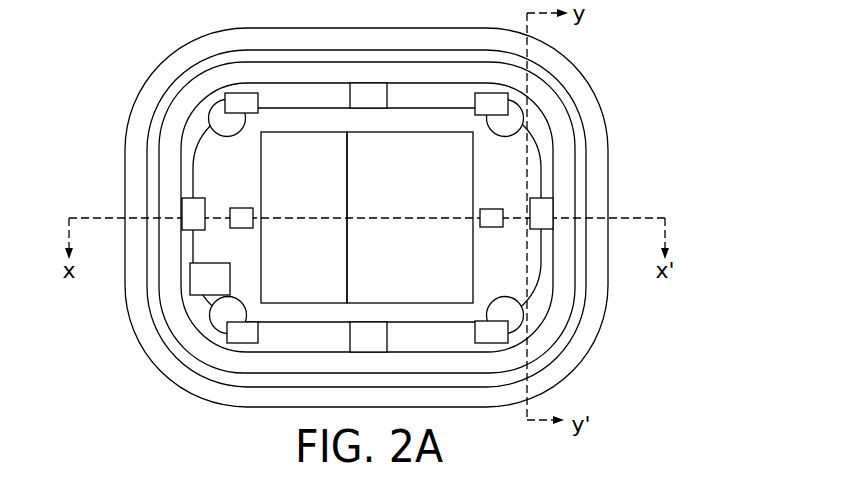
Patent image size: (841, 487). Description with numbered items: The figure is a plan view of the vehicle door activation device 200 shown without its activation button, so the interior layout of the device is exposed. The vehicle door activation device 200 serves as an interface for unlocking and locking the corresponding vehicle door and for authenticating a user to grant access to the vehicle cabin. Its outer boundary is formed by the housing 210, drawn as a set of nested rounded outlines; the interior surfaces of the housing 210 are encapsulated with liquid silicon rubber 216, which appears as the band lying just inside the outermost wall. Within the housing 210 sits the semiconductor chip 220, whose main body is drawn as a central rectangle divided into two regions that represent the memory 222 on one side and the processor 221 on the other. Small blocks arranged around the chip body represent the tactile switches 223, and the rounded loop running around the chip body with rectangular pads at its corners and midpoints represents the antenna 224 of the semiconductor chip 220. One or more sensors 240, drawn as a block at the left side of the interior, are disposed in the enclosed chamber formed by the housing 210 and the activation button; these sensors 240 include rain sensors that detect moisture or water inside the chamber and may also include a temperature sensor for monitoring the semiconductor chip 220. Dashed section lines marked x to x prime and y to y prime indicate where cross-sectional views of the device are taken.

The vehicle door activation device 200 is at (366, 214).
The housing 210 is at (322, 214).
The liquid silicon rubber 216 is at (175, 85).
The semiconductor chip 220 is at (163, 127).
The antenna 224 is at (170, 173).
The sensors 240 is at (198, 278).
The memory 222 is at (327, 189).
The processor 221 is at (380, 189).
The tactile switches 223 is at (491, 208).